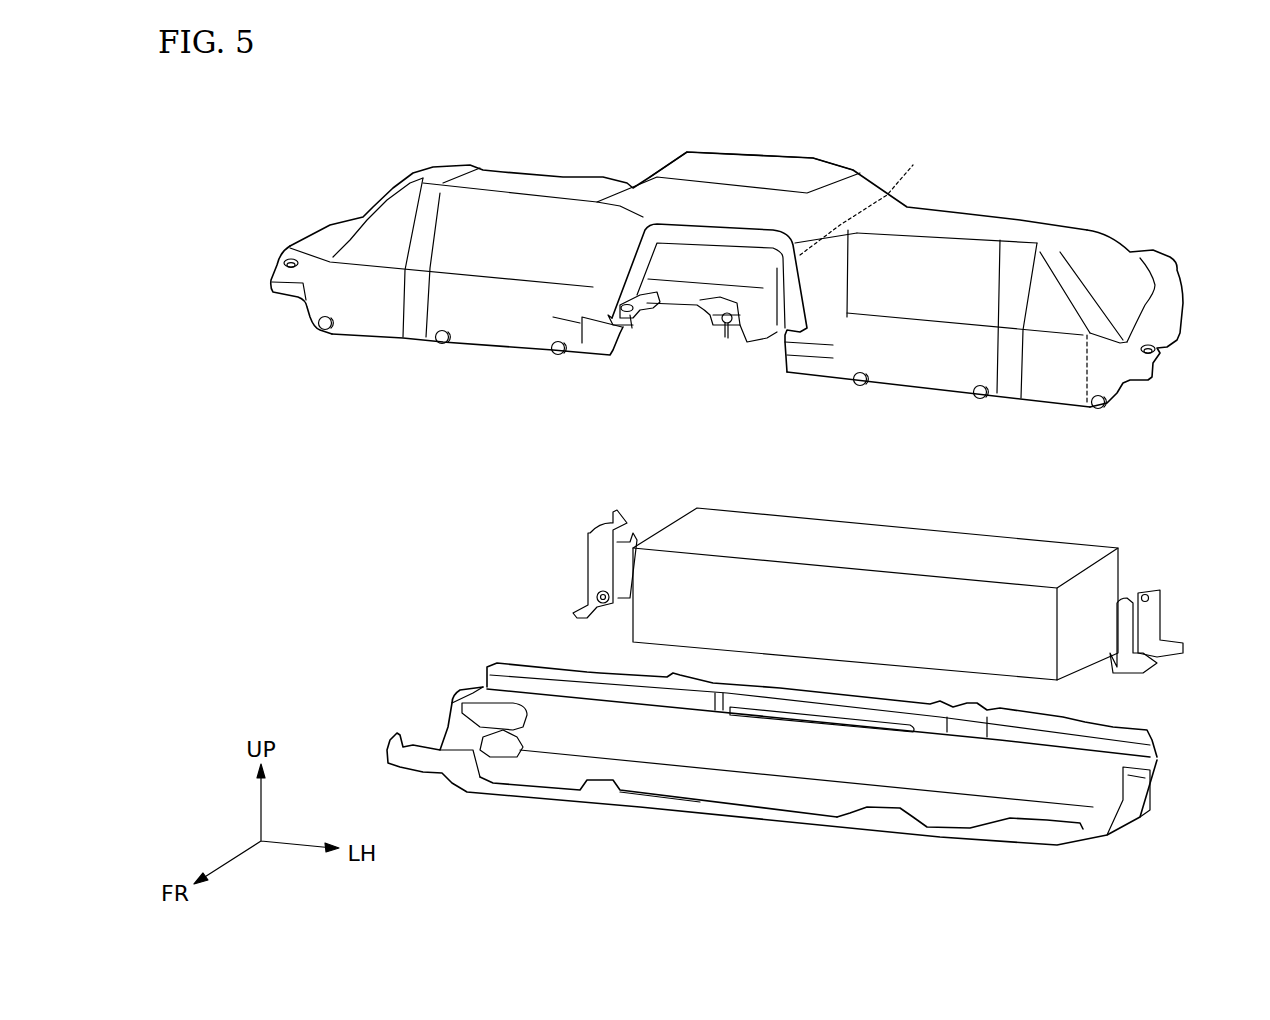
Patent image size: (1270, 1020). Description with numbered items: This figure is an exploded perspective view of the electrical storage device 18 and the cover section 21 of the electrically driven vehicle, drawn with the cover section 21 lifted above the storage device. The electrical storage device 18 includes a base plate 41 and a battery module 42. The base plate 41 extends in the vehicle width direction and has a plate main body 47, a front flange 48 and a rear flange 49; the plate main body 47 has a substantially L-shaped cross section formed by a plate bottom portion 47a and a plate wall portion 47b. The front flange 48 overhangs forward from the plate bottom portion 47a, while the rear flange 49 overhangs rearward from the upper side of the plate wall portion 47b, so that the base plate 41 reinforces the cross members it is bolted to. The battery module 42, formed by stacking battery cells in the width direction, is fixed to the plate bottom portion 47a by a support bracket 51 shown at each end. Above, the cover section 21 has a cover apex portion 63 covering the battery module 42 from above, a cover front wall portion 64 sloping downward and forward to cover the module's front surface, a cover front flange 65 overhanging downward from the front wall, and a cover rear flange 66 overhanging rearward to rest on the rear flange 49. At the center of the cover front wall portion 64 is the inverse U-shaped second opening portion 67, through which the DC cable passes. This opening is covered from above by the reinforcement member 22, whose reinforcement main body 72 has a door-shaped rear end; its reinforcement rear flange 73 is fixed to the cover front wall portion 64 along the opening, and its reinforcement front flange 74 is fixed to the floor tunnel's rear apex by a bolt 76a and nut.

The cover section 21 is at (847, 170).
The reinforcement member 22 is at (671, 262).
The cover apex portion 63 is at (767, 160).
The cover front wall portion 64 is at (615, 218).
The cover front flange 65 is at (552, 322).
The cover rear flange 66 is at (1160, 255).
The second opening portion 67 is at (800, 255).
The reinforcement main body 72 is at (687, 255).
The reinforcement rear flange 73 is at (757, 240).
The reinforcement front flange 74 is at (683, 293).
The bolt 76a is at (652, 300).
The electrical storage device 18 is at (975, 521).
The battery module 42 is at (1033, 548).
The support bracket 51 is at (622, 578).
The base plate 41 is at (657, 815).
The plate main body 47 is at (693, 873).
The plate bottom portion 47a is at (737, 792).
The plate wall portion 47b is at (832, 760).
The front flange 48 is at (1047, 838).
The rear flange 49 is at (1113, 720).